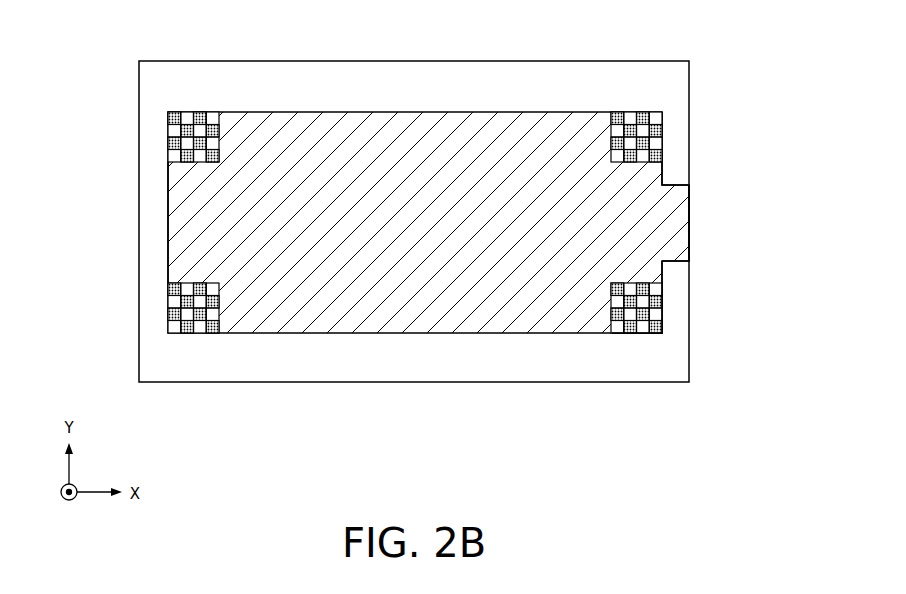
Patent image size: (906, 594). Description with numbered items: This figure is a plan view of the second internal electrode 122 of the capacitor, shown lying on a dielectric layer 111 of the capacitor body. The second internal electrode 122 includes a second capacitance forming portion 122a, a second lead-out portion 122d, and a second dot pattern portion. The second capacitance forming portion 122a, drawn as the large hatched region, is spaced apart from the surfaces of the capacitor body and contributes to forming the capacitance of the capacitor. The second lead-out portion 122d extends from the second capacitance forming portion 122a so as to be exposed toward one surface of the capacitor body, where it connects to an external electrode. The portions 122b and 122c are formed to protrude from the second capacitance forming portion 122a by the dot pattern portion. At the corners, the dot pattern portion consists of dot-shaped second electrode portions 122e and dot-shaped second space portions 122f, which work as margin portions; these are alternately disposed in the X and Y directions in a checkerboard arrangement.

The dielectric layer 111 is at (585, 87).
The second internal electrode 122 is at (462, 100).
The second capacitance forming portion 122a is at (425, 290).
The protruding portion 122b is at (632, 237).
The protruding portion 122c is at (193, 216).
The second lead-out portion 122d is at (676, 199).
The second electrode portion 122e is at (663, 326).
The second space portion 122f is at (653, 314).